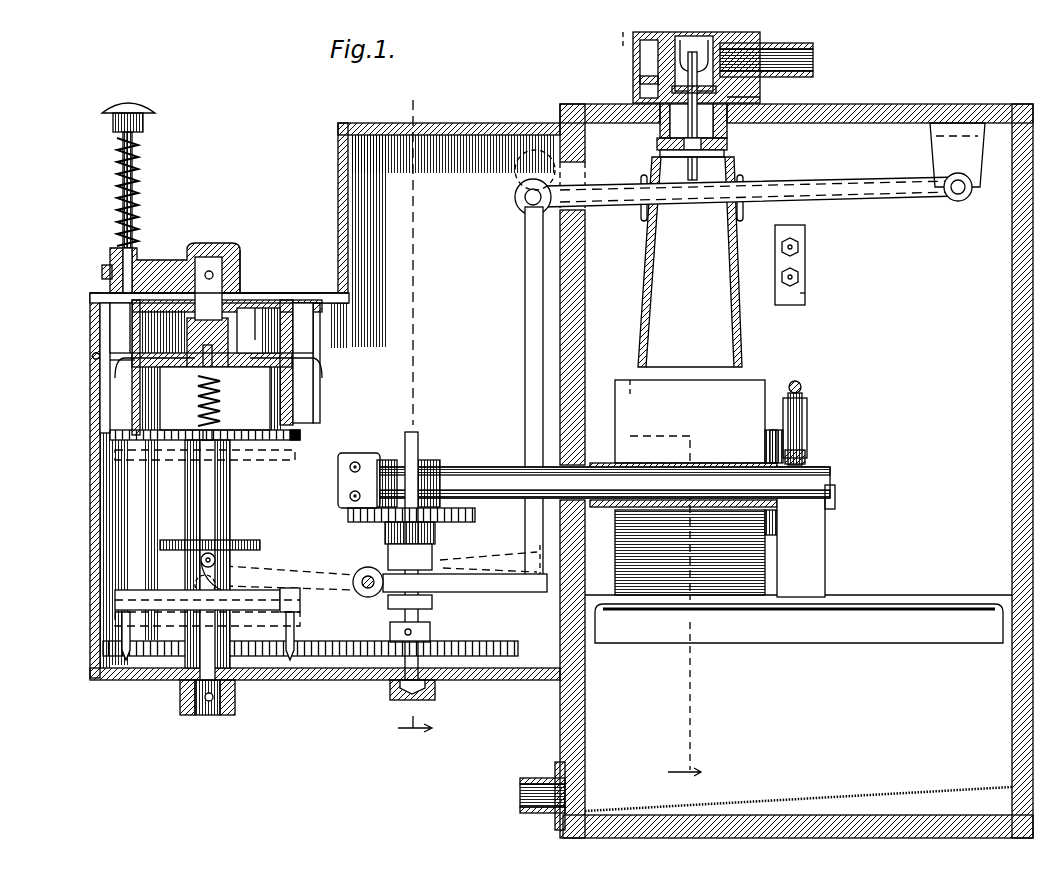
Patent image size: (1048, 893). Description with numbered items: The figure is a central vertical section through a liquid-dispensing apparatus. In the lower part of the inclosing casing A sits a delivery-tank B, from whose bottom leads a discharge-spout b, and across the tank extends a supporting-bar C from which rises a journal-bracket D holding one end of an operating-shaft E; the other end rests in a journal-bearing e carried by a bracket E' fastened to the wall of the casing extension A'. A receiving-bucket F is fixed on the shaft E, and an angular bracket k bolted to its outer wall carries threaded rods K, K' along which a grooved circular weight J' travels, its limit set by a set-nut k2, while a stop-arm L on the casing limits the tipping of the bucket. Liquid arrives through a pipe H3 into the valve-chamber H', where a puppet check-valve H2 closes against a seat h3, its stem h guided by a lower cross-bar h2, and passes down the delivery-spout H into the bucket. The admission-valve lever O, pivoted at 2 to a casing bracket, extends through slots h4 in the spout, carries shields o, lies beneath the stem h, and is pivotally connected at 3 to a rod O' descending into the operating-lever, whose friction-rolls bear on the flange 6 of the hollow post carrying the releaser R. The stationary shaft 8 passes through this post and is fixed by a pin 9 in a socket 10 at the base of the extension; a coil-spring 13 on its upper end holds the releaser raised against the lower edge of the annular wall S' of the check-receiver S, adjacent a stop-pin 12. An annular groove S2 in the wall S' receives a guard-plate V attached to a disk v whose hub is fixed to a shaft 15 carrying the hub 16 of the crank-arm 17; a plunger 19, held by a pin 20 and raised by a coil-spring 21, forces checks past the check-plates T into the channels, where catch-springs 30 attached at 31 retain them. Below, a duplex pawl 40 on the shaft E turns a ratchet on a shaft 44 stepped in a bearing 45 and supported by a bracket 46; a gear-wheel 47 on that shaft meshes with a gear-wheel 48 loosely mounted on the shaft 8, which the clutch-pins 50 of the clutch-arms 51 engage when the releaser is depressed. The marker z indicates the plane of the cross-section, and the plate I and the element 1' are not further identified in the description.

The inclosing casing A is at (796, 471).
The discharge-spout b is at (542, 792).
The delivery-tank B is at (895, 780).
The supporting-bar C is at (799, 623).
The section line z is at (659, 413).
The valve-chamber H' is at (694, 85).
The check-valve H2 is at (640, 80).
The valve stem h is at (748, 153).
The supply pipe H3 is at (813, 58).
The valve seat h3 is at (748, 97).
The lower perforated cross-bar h2 is at (728, 142).
The slots h4 is at (640, 222).
The shields o is at (640, 206).
The admission-valve lever O is at (751, 201).
The pivotal connection 3 is at (514, 205).
The pivot 2 is at (962, 200).
The rod O' is at (520, 394).
The delivery-spout H is at (777, 265).
The stop-arm L is at (805, 294).
The receiving-bucket F is at (683, 490).
The journal-bracket D is at (801, 532).
The rod K' is at (813, 382).
The circular weight J' is at (808, 429).
The angular bracket k is at (785, 440).
The rod K is at (811, 453).
The operating-shaft E is at (612, 479).
The cross-bar bracket E' is at (342, 480).
The journal-bearing e is at (390, 459).
The duplex pawl 40 is at (418, 445).
The bracket 46 is at (435, 545).
The set-nut k2 is at (255, 565).
The shaft 44 is at (432, 610).
The gear-wheel 47 is at (368, 650).
The gear-wheel 48 is at (274, 655).
The bearing 45 is at (388, 686).
The casing extension A' is at (433, 235).
The socket 10 is at (236, 692).
The shaft column 1' is at (325, 486).
The stationary shaft 8 is at (203, 378).
The pin 9 is at (208, 702).
The flange 6 is at (222, 556).
The clutch-arm 51 is at (207, 600).
The clutch-pin 50 is at (120, 620).
The check-plate T is at (112, 293).
The plunger 19 is at (118, 213).
The coil-spring 21 is at (136, 182).
The crank-arm 17 is at (175, 264).
The hub 16 is at (208, 272).
The shaft 15 is at (233, 268).
The pin 20 is at (102, 271).
The attachment point 31 is at (92, 318).
The annular wall S' is at (201, 363).
The check-receiver S is at (280, 281).
The plate I is at (306, 293).
The annular groove S2 is at (95, 357).
The catch-spring 30 is at (95, 378).
The guard-plate V is at (258, 330).
The disk v is at (215, 398).
The coil-spring 13 is at (223, 401).
The releaser R is at (210, 440).
The stop-pin 12 is at (280, 442).